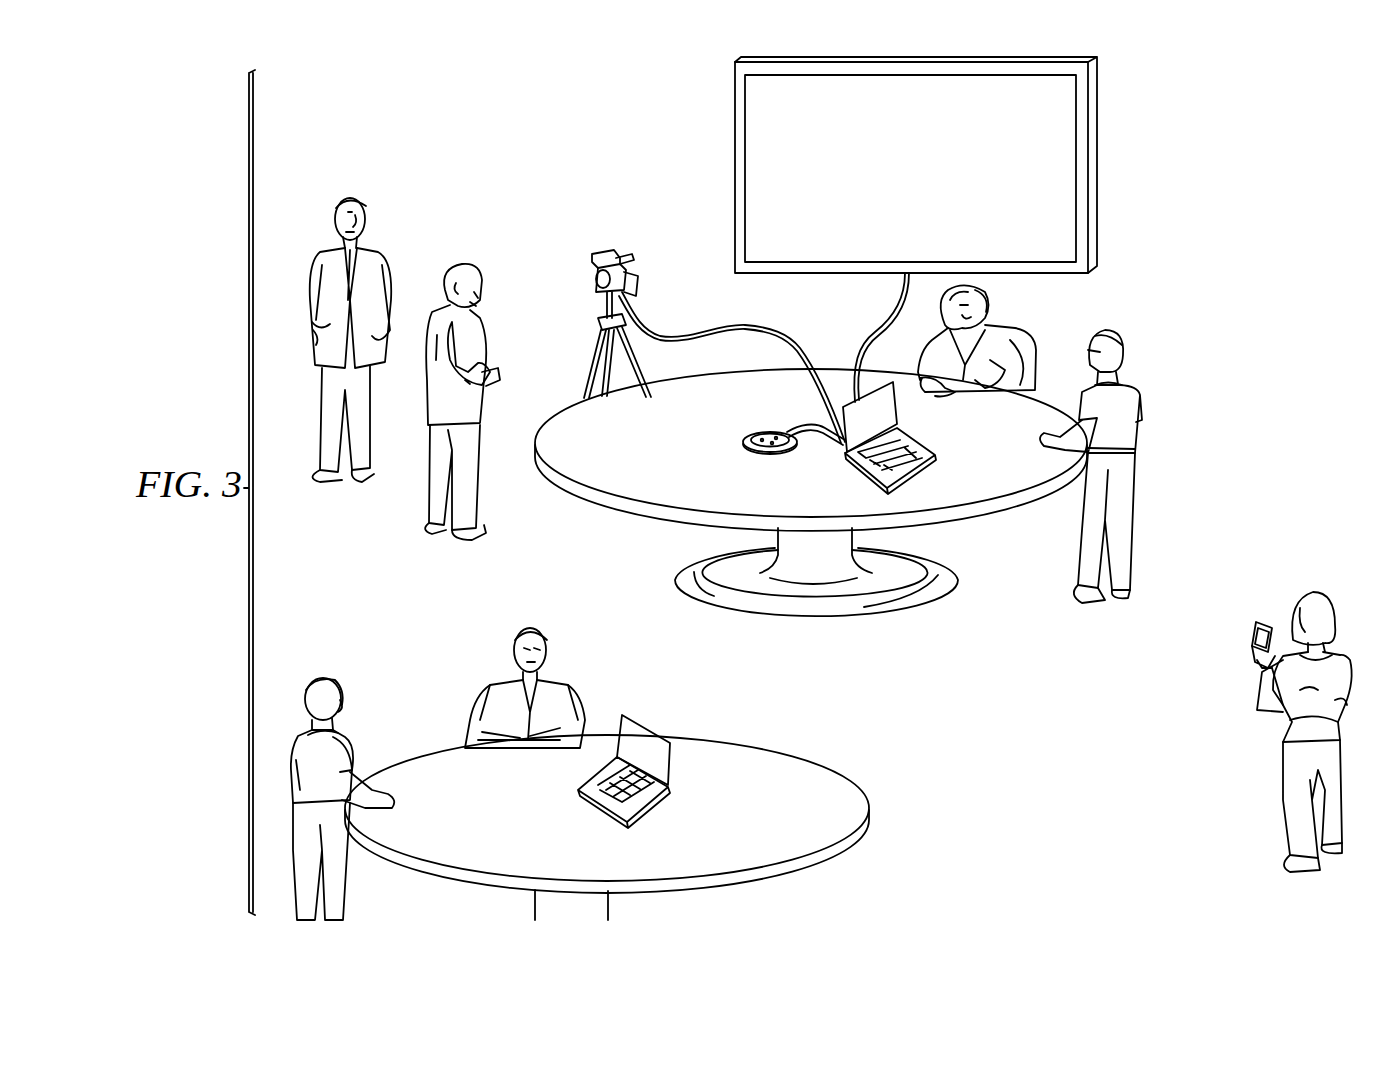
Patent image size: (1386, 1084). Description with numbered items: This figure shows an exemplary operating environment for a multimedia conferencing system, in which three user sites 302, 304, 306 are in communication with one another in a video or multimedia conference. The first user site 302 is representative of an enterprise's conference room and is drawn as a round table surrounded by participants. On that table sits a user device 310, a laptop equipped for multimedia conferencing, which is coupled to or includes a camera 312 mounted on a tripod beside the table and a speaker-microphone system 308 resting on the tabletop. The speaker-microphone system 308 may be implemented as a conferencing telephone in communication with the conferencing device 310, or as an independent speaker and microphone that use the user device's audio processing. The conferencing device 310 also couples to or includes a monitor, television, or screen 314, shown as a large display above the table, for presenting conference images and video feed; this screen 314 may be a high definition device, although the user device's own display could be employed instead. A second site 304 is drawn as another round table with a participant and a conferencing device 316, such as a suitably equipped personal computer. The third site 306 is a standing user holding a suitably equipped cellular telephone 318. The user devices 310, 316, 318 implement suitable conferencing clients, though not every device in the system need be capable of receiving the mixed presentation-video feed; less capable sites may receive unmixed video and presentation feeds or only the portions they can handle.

The user site 302 is at (726, 394).
The user site 304 is at (580, 764).
The user site 306 is at (1290, 684).
The speaker-microphone system 308 is at (768, 431).
The user device 310 is at (930, 443).
The camera 312 is at (598, 250).
The screen 314 is at (1092, 138).
The conferencing device 316 is at (672, 757).
The cellular telephone 318 is at (1258, 625).